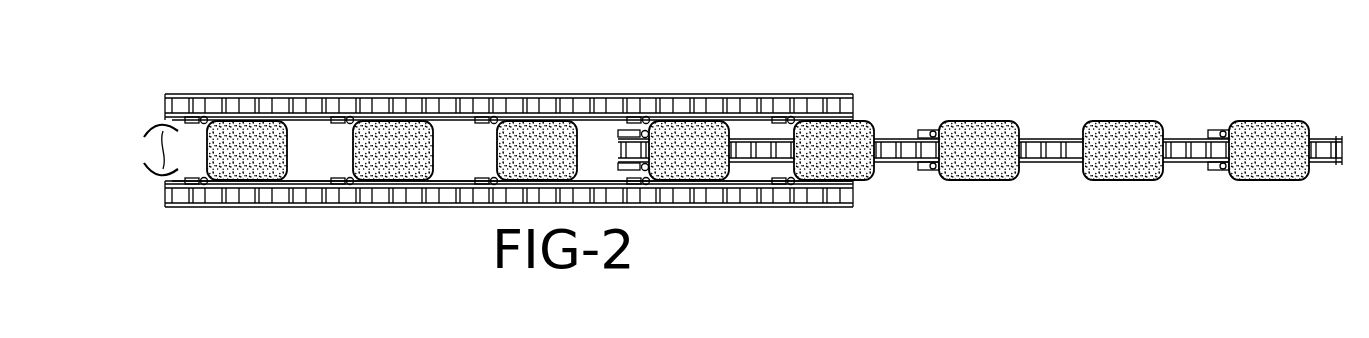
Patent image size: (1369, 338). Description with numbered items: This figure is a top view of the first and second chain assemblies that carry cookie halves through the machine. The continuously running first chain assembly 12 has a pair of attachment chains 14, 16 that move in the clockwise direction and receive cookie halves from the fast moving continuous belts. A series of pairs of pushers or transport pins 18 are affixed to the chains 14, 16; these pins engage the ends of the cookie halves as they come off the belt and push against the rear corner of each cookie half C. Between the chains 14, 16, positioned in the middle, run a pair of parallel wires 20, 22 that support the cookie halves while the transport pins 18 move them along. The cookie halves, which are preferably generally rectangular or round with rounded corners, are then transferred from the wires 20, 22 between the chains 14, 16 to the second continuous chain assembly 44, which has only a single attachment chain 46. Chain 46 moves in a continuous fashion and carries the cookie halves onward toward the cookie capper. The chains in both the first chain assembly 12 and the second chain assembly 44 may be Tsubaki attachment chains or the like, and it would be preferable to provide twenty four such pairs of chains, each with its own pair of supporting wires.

The first chain assembly 12 is at (473, 93).
The chain 14 is at (212, 104).
The chain 16 is at (303, 205).
The transport pins 18 is at (353, 117).
The parallel wire 20 is at (146, 135).
The parallel wire 22 is at (146, 165).
The second chain assembly 44 is at (905, 130).
The attachment chain 46 is at (1046, 163).
The cookie half C is at (993, 122).